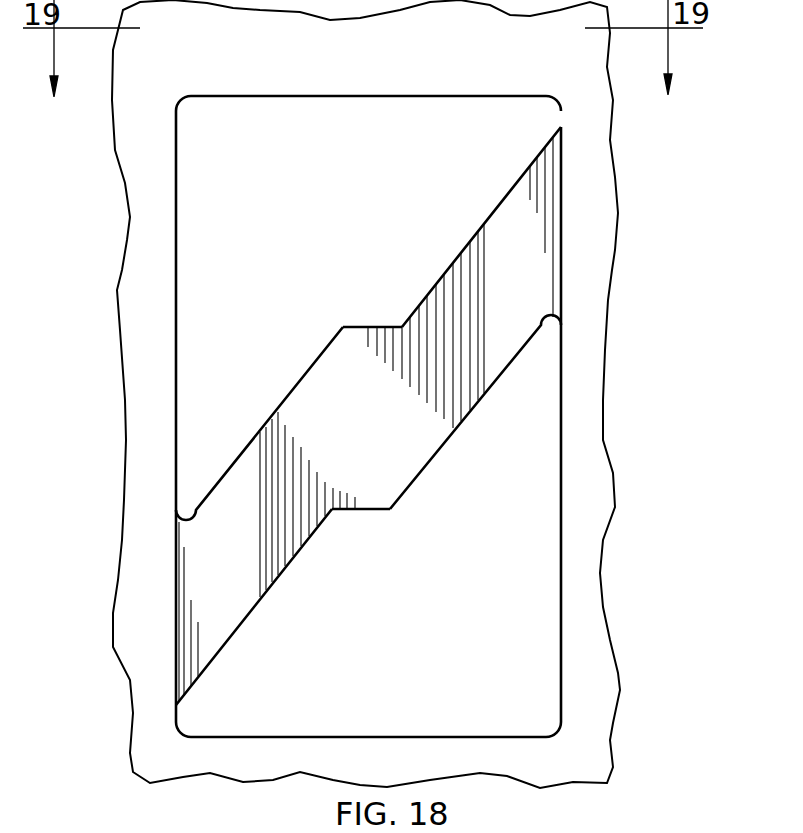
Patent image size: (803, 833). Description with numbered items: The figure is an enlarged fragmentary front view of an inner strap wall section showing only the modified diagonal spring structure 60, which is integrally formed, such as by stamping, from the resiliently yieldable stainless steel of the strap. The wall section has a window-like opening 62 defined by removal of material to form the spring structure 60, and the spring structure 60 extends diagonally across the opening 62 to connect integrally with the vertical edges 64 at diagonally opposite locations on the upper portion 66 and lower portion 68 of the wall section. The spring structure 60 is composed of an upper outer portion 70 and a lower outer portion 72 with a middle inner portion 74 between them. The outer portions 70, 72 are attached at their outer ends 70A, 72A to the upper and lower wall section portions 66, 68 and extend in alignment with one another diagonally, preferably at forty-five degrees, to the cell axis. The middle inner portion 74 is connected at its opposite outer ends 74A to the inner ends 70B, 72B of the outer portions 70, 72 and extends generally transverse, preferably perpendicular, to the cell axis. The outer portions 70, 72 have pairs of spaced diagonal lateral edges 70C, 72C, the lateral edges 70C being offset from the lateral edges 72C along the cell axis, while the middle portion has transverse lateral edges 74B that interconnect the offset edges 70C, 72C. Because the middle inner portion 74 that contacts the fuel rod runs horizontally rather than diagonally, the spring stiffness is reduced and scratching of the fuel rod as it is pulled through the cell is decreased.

The modified diagonal spring structure 60 is at (379, 424).
The window-like opening 62 is at (379, 408).
The vertical edges 64 is at (176, 377).
The upper portion 66 is at (378, 69).
The lower portion 68 is at (390, 769).
The upper outer portion 70 is at (537, 318).
The outer end 70A is at (561, 247).
The inner end 70B is at (462, 327).
The lateral edges 70C is at (509, 192).
The lower outer portion 72 is at (203, 492).
The outer end 72A is at (180, 603).
The inner end 72B is at (272, 496).
The lateral edges 72C is at (236, 467).
The middle inner portion 74 is at (373, 447).
The outer ends 74A is at (323, 407).
The lateral edges 74B is at (363, 327).